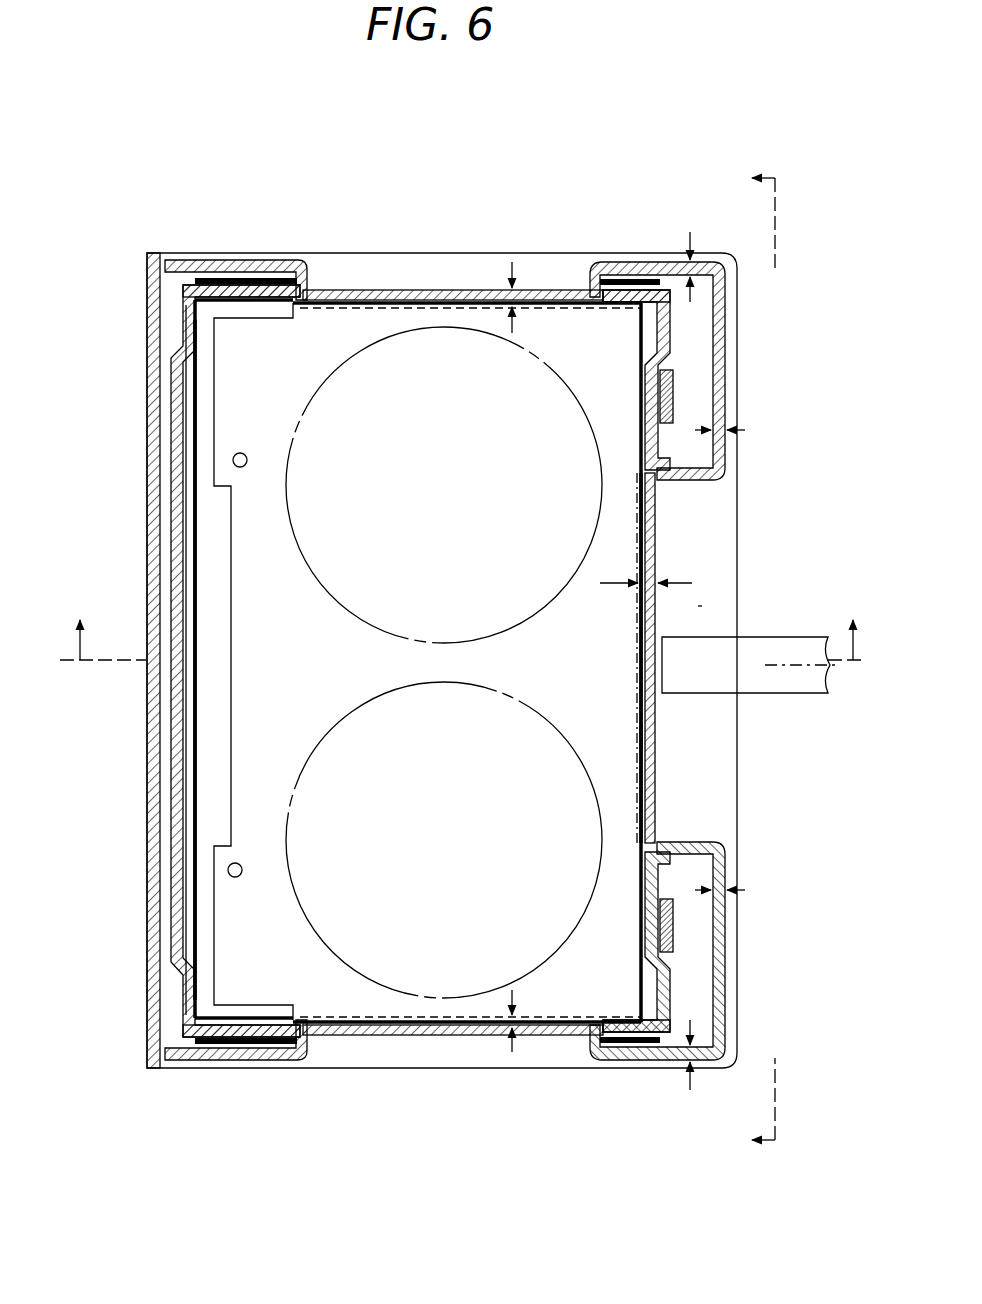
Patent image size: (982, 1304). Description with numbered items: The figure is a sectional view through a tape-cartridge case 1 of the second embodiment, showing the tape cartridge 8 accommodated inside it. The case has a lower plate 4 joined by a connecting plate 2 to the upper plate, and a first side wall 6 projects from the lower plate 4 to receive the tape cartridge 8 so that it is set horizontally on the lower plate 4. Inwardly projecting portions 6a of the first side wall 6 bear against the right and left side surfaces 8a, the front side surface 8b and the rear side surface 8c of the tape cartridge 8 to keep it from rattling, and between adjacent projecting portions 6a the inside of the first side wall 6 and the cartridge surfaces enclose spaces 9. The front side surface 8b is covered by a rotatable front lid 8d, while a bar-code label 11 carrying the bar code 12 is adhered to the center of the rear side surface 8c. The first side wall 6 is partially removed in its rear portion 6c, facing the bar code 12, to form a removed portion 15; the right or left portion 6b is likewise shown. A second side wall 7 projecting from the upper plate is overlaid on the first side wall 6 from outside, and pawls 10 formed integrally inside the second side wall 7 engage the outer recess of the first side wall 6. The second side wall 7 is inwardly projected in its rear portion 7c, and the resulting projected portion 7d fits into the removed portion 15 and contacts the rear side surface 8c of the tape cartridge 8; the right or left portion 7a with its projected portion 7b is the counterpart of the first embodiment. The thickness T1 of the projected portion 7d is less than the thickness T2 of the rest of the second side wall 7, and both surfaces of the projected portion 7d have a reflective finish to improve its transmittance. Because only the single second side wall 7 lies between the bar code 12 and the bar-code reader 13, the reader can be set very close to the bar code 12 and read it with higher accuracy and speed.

The tape-cartridge case 1 is at (158, 240).
The connecting plate 2 is at (145, 541).
The lower plate 4 is at (700, 608).
The first side wall 6 is at (442, 667).
The inwardly projecting portions 6a is at (430, 661).
The right or left portion 6b is at (250, 266).
The rear portion 6c is at (615, 356).
The second side wall 7 is at (504, 672).
The right or left portion 7a is at (270, 284).
The projected portion 7b is at (453, 289).
The rear portion 7c is at (722, 336).
The projected portion 7d is at (655, 796).
The tape cartridge 8 is at (445, 657).
The right and left side surfaces 8a is at (290, 297).
The front side surface 8b is at (190, 806).
The rear side surface 8c is at (655, 719).
The front lid 8d is at (232, 676).
The spaces 9 is at (650, 326).
The pawls 10 is at (675, 396).
The bar-code label 11 is at (545, 300).
The bar code 12 is at (655, 739).
The bar-code reader 13 is at (785, 656).
The removed portion 15 is at (292, 300).
The thickness of projected portion T1 is at (518, 310).
The thickness of second side wall T2 is at (695, 262).